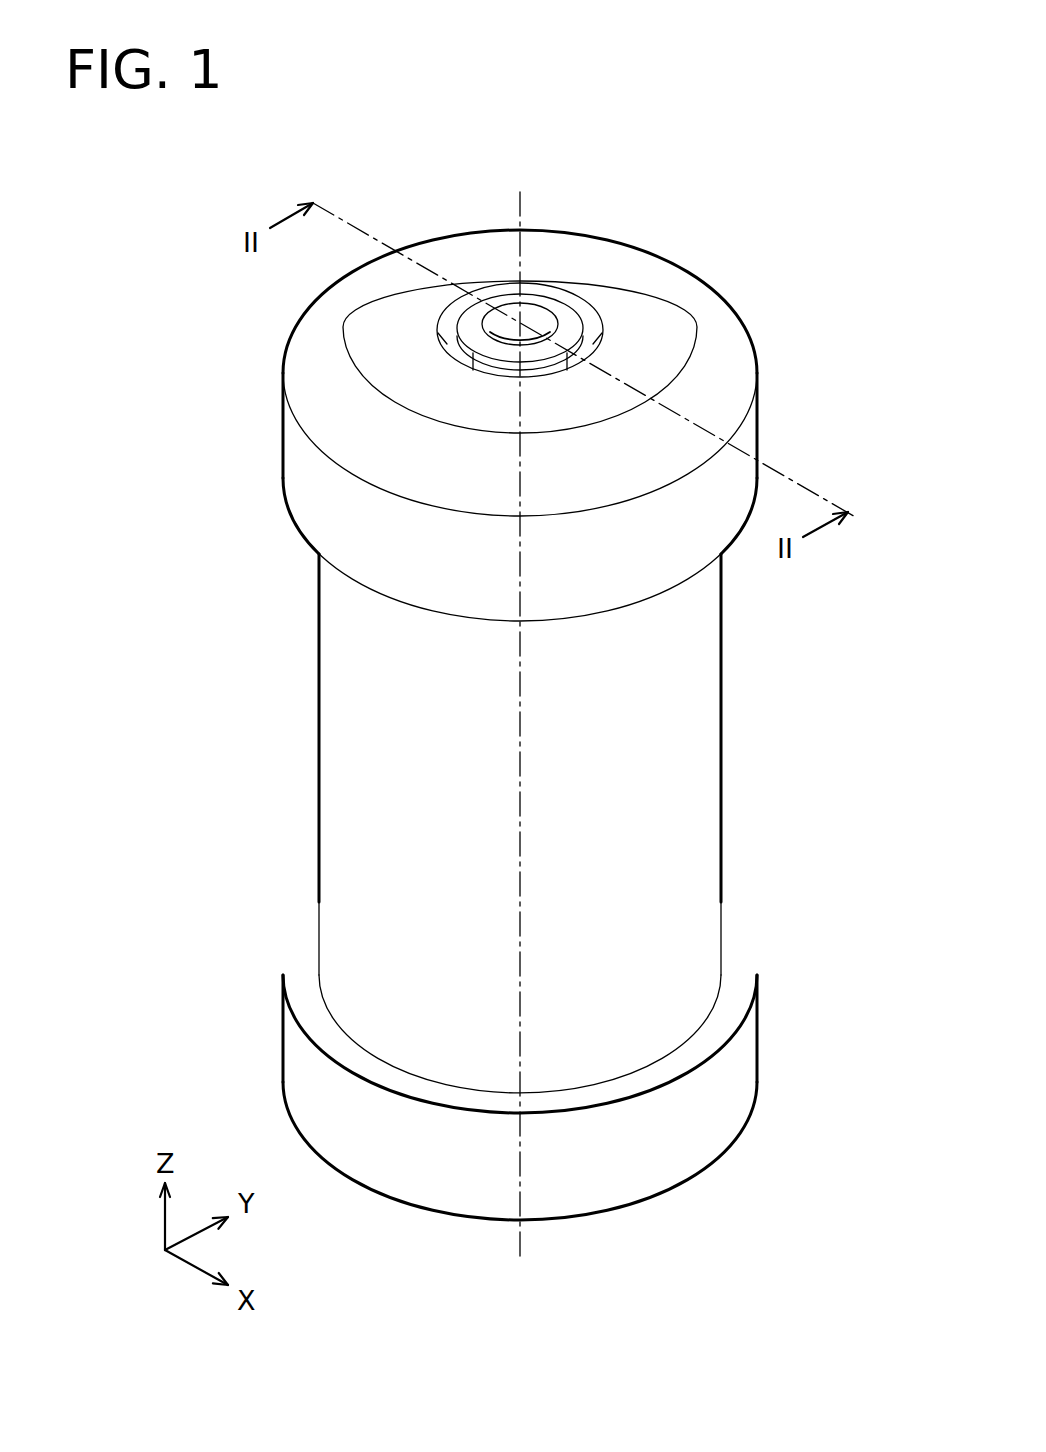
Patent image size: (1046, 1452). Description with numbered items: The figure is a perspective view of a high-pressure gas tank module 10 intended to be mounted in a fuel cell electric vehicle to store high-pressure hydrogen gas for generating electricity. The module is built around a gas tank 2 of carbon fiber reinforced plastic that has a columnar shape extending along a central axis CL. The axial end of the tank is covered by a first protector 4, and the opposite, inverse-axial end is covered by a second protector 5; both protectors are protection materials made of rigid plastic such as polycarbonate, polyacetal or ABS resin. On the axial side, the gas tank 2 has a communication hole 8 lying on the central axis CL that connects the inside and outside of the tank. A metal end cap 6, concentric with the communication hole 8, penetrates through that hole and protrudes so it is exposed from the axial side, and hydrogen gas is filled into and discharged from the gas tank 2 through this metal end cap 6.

The high-pressure gas tank module 10 is at (707, 198).
The gas tank 2 is at (330, 732).
The first protector 4 is at (295, 480).
The second protector 5 is at (305, 951).
The metal end cap 6 is at (508, 296).
The communication hole 8 is at (527, 338).
The central axis CL is at (520, 710).